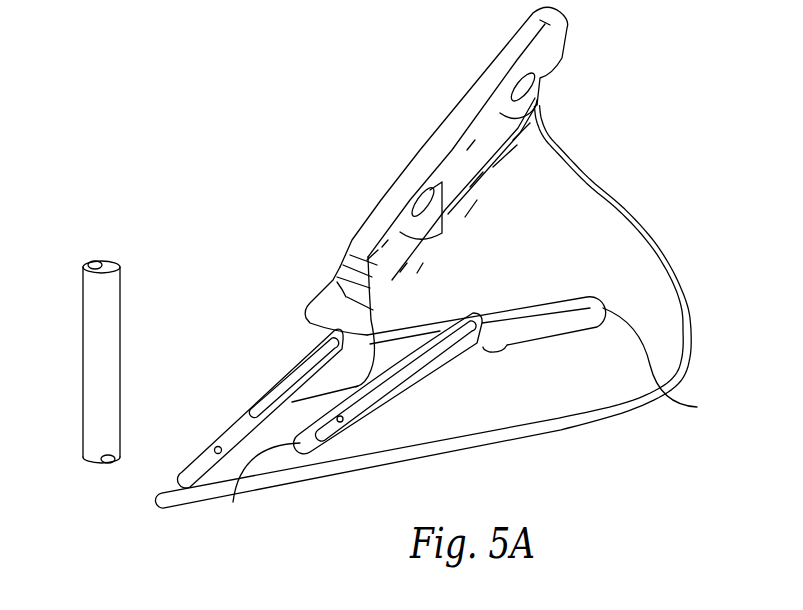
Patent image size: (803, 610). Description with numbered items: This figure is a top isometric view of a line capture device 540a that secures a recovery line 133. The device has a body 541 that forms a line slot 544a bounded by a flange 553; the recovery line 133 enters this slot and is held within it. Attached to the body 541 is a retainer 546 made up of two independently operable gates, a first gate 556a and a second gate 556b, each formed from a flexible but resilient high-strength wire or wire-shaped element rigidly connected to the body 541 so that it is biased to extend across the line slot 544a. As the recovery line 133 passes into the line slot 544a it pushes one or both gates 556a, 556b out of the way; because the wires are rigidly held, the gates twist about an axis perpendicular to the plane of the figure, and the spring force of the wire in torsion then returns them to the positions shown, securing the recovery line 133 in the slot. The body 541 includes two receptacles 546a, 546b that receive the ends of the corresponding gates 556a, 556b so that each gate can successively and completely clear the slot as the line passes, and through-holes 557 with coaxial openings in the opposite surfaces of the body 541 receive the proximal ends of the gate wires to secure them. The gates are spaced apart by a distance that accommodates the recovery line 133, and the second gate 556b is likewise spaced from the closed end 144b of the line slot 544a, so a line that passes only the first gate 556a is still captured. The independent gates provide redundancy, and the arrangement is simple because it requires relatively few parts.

The line capture device 540a is at (322, 197).
The flange 553 is at (472, 100).
The body 541 is at (590, 207).
The receptacle 546a is at (325, 308).
The line slot 544a is at (293, 340).
The retainer 546 is at (222, 373).
The recovery line 133 is at (93, 392).
The first gate 556a is at (240, 414).
The second gate 556b is at (313, 437).
The through-holes 557 is at (195, 477).
The closed end 144b is at (671, 364).
The receptacle 546b is at (483, 347).